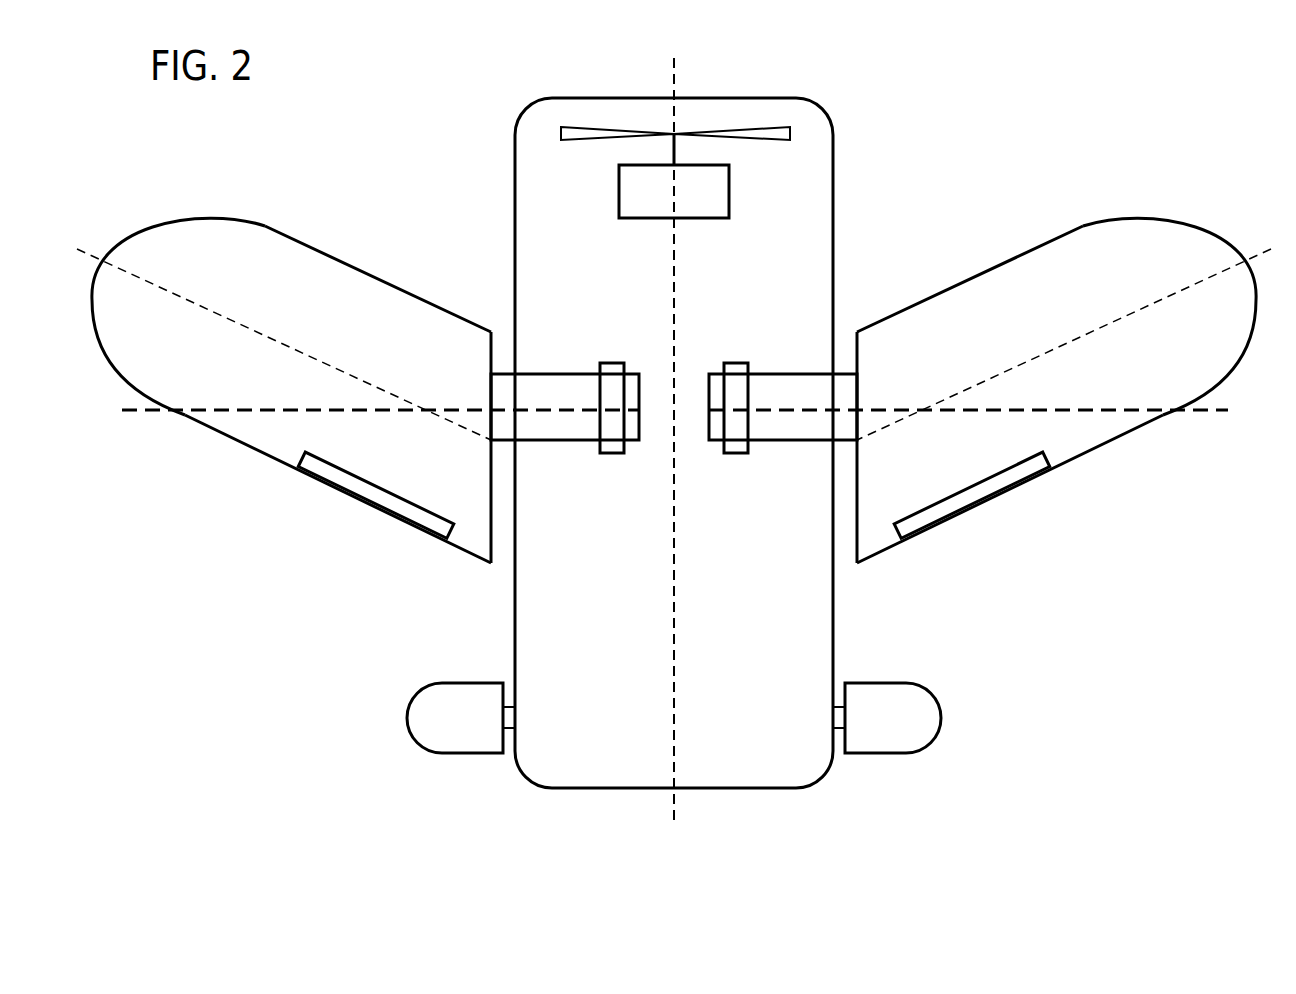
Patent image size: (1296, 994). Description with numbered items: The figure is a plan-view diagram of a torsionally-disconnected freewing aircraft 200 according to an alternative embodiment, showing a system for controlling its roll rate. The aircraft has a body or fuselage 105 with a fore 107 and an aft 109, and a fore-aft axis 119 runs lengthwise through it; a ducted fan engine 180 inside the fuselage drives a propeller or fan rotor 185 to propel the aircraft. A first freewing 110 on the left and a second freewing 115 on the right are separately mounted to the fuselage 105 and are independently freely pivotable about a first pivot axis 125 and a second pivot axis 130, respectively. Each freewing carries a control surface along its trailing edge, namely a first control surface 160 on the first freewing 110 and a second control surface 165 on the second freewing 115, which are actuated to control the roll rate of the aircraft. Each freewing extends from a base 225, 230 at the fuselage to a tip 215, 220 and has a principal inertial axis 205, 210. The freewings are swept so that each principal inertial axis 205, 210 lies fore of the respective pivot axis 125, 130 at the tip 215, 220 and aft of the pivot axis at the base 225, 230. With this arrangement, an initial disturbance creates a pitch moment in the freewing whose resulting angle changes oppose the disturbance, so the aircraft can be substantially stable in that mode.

The fuselage 105 is at (835, 203).
The fore 107 is at (782, 61).
The aft 109 is at (803, 809).
The first freewing 110 is at (284, 387).
The second freewing 115 is at (1064, 384).
The fore-aft axis 119 is at (670, 803).
The first pivot axis 125 is at (140, 418).
The second pivot axis 130 is at (1203, 410).
The first control surface 160 is at (335, 482).
The second control surface 165 is at (998, 485).
The ducted fan engine 180 is at (729, 185).
The propeller or fan rotor 185 is at (597, 140).
The torsionally-disconnected freewing aircraft 200 is at (272, 675).
The principal inertial axis 205 is at (203, 310).
The principal inertial axis 210 is at (1135, 310).
The tip 215 is at (104, 256).
The tip 220 is at (1245, 257).
The base 225 is at (491, 387).
The base 230 is at (857, 393).